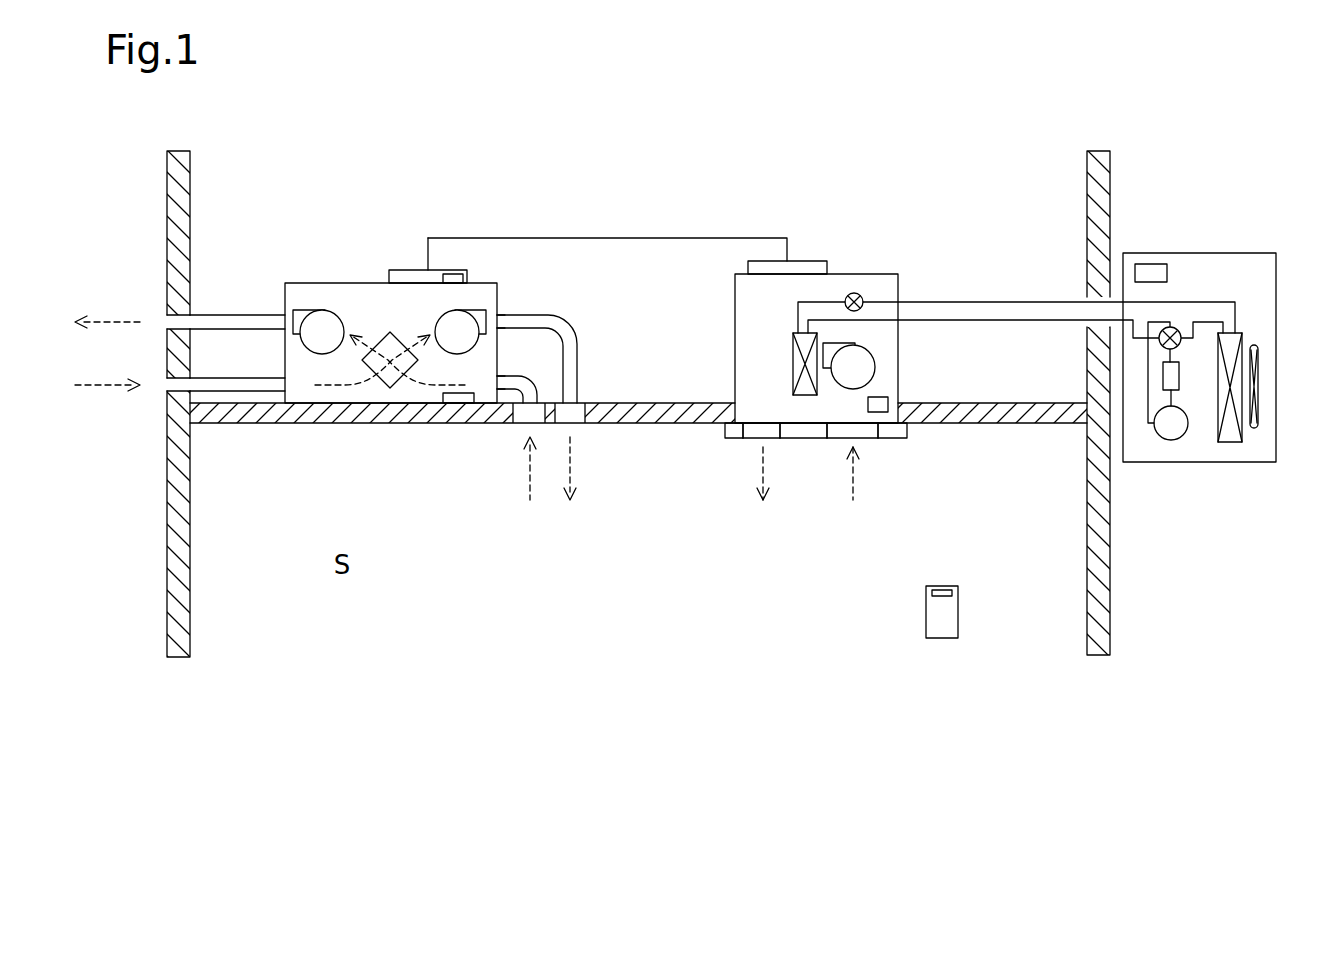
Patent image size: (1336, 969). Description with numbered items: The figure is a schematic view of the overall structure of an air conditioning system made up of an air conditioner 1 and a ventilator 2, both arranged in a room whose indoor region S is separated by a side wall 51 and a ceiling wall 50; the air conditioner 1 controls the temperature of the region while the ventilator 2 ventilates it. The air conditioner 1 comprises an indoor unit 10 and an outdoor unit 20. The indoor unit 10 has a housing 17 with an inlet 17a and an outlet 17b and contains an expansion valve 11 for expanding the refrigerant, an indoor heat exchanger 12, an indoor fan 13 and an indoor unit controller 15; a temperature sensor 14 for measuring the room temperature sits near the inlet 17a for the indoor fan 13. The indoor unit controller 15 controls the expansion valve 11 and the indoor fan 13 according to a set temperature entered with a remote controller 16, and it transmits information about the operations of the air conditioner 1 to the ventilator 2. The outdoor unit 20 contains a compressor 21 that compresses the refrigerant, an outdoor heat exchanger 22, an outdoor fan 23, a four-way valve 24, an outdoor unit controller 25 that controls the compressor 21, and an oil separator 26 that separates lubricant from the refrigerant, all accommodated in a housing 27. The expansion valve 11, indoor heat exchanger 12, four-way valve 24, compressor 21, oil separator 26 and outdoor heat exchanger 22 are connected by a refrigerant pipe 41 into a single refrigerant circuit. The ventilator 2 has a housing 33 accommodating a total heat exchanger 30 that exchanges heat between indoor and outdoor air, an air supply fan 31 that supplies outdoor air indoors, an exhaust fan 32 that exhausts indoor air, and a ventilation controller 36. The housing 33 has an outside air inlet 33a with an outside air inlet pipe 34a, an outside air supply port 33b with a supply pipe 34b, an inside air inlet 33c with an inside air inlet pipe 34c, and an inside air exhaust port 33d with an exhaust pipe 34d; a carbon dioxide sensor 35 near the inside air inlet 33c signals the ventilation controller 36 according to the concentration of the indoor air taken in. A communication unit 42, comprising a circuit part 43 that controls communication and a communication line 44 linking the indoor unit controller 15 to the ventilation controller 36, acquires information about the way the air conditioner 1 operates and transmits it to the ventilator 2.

The air conditioner 1 is at (1067, 218).
The ventilator 2 is at (359, 331).
The indoor unit 10 is at (897, 274).
The expansion valve 11 is at (853, 293).
The indoor heat exchanger 12 is at (792, 368).
The indoor fan 13 is at (875, 352).
The temperature sensor 14 is at (882, 413).
The indoor unit controller 15 is at (807, 260).
The remote controller 16 is at (958, 622).
The housing 17 is at (735, 292).
The inlet 17a is at (835, 438).
The outlet 17b is at (752, 438).
The outdoor unit 20 is at (1170, 351).
The compressor 21 is at (1173, 440).
The outdoor heat exchanger 22 is at (1230, 442).
The outdoor fan 23 is at (1258, 355).
The four-way valve 24 is at (1177, 327).
The outdoor unit controller 25 is at (1159, 264).
The oil separator 26 is at (1179, 373).
The housing 27 is at (1263, 253).
The total heat exchanger 30 is at (398, 338).
The air supply fan 31 is at (478, 307).
The exhaust fan 32 is at (307, 307).
The housing 33 is at (285, 290).
The outside air inlet 33a is at (284, 378).
The outside air supply port 33b is at (500, 310).
The inside air inlet 33c is at (500, 377).
The inside air exhaust port 33d is at (285, 313).
The outside air inlet pipe 34a is at (247, 393).
The supply pipe 34b is at (572, 318).
The inside air inlet pipe 34c is at (508, 393).
The exhaust pipe 34d is at (207, 329).
The carbon dioxide sensor 35 is at (470, 393).
The ventilation controller 36 is at (402, 268).
The refrigerant pipe 41 is at (997, 322).
The communication unit 42 is at (607, 217).
The circuit part 43 is at (450, 273).
The communication line 44 is at (438, 187).
The ceiling wall 50 is at (390, 423).
The side wall 51 is at (190, 562).